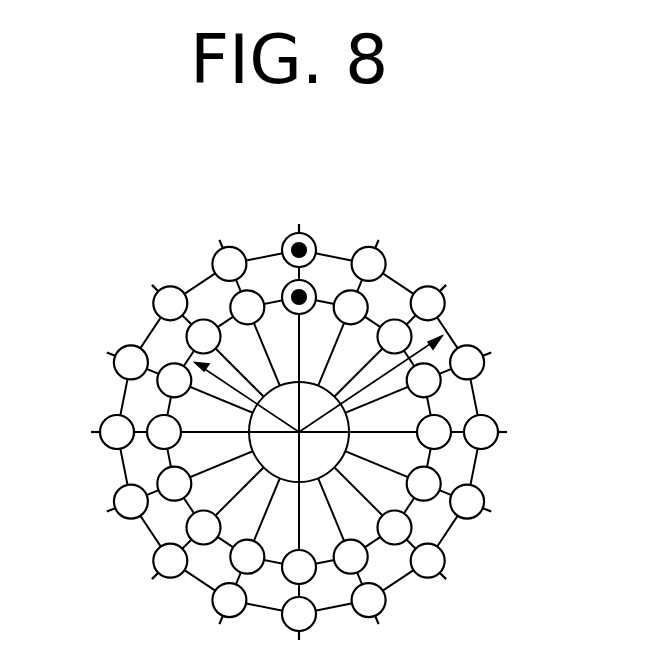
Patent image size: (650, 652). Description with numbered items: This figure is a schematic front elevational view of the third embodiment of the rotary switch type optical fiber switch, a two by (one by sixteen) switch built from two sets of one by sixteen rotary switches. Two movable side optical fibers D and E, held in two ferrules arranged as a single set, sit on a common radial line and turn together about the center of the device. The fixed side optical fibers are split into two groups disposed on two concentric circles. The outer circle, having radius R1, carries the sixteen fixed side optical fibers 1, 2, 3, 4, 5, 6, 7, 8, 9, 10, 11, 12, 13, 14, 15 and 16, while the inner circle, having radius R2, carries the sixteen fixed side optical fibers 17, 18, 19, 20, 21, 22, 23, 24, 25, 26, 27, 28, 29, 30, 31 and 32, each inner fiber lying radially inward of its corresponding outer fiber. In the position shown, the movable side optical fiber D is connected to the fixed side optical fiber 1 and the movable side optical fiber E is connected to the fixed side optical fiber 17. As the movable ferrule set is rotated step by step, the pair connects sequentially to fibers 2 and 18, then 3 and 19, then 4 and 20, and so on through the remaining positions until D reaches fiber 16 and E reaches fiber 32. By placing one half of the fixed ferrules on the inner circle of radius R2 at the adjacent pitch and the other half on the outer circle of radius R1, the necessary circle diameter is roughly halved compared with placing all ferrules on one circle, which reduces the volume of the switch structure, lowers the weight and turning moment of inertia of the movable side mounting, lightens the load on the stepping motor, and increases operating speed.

The fixed side optical fiber 1 is at (299, 245).
The fixed side optical fiber 2 is at (369, 260).
The fixed side optical fiber 3 is at (428, 302).
The fixed side optical fiber 4 is at (470, 362).
The fixed side optical fiber 5 is at (485, 432).
The fixed side optical fiber 6 is at (470, 502).
The fixed side optical fiber 7 is at (428, 561).
The fixed side optical fiber 8 is at (369, 603).
The fixed side optical fiber 9 is at (299, 618).
The fixed side optical fiber 10 is at (229, 603).
The fixed side optical fiber 11 is at (169, 561).
The fixed side optical fiber 12 is at (127, 502).
The fixed side optical fiber 13 is at (112, 432).
The fixed side optical fiber 14 is at (127, 362).
The fixed side optical fiber 15 is at (169, 302).
The fixed side optical fiber 16 is at (229, 260).
The fixed side optical fiber 17 is at (299, 297).
The fixed side optical fiber 18 is at (351, 307).
The fixed side optical fiber 19 is at (395, 337).
The fixed side optical fiber 20 is at (424, 380).
The fixed side optical fiber 21 is at (434, 432).
The fixed side optical fiber 22 is at (424, 484).
The fixed side optical fiber 23 is at (395, 528).
The fixed side optical fiber 24 is at (351, 557).
The fixed side optical fiber 25 is at (299, 567).
The fixed side optical fiber 26 is at (247, 557).
The fixed side optical fiber 27 is at (204, 528).
The fixed side optical fiber 28 is at (174, 484).
The fixed side optical fiber 29 is at (164, 432).
The fixed side optical fiber 30 is at (174, 380).
The fixed side optical fiber 31 is at (204, 337).
The fixed side optical fiber 32 is at (247, 307).
The movable side optical fiber D is at (278, 236).
The movable side optical fiber E is at (312, 269).
The radius of outer circle R1 is at (423, 346).
The radius of inner circle R2 is at (225, 386).